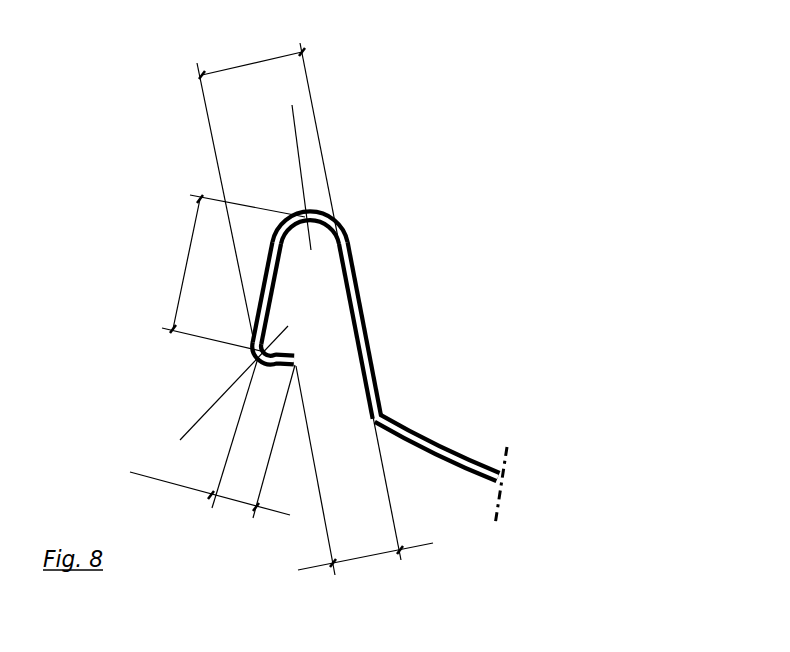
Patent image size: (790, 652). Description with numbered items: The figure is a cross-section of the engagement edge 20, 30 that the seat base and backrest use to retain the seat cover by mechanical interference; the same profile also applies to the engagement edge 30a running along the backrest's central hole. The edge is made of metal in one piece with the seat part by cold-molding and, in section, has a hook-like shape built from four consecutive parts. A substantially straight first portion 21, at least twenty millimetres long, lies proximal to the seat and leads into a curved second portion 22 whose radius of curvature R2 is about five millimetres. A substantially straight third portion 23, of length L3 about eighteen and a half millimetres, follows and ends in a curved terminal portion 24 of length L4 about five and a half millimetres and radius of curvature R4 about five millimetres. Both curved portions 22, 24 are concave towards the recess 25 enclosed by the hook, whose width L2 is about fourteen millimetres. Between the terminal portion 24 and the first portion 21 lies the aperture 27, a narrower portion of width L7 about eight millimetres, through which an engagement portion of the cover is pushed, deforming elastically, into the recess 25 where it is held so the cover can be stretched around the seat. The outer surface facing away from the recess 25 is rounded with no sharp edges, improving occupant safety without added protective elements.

The engagement edge 20 is at (469, 176).
The engagement edge 30 is at (323, 326).
The engagement edge 30a is at (323, 326).
The first portion 21 is at (356, 290).
The second portion 22 is at (301, 216).
The third portion 23 is at (268, 276).
The terminal portion 24 is at (277, 366).
The recess 25 is at (313, 312).
The aperture 27 is at (330, 363).
The width of recess L2 is at (299, 295).
The radius of curvature R2 is at (284, 177).
The length of third portion L3 is at (227, 273).
The radius of curvature R4 is at (217, 394).
The length of terminal portion L4 is at (212, 452).
The width of narrower portion L7 is at (364, 480).